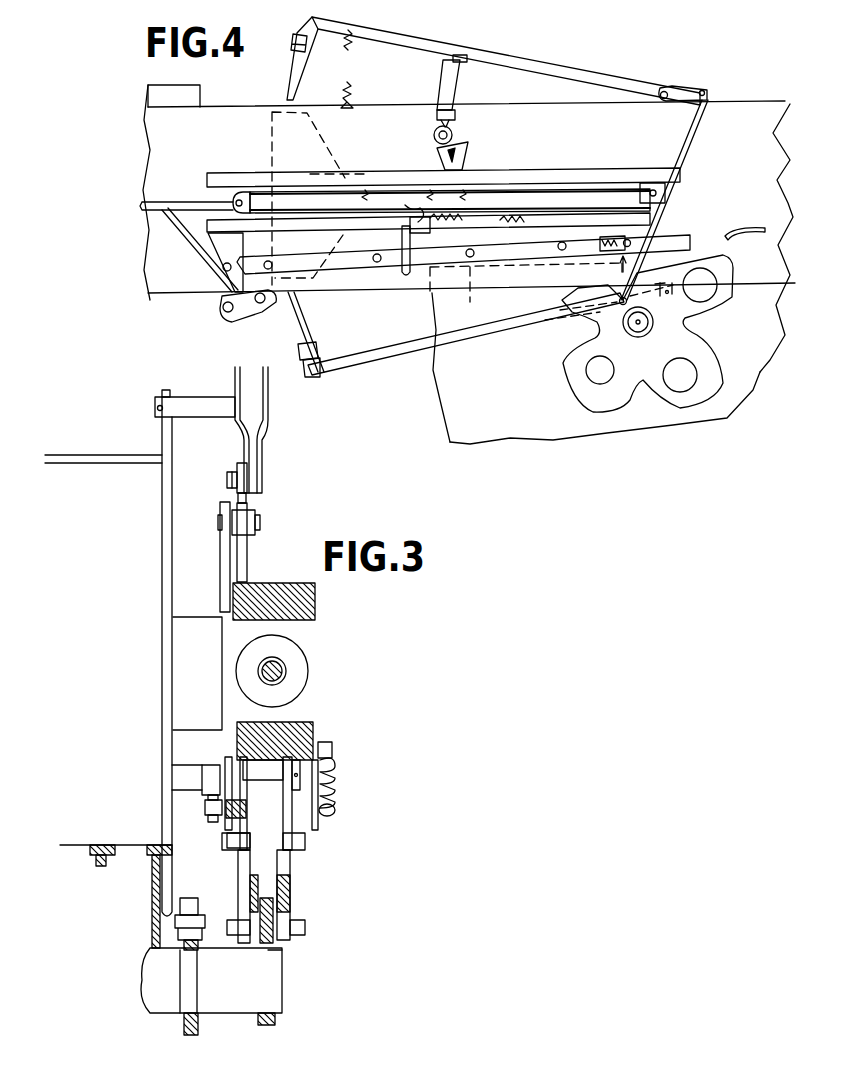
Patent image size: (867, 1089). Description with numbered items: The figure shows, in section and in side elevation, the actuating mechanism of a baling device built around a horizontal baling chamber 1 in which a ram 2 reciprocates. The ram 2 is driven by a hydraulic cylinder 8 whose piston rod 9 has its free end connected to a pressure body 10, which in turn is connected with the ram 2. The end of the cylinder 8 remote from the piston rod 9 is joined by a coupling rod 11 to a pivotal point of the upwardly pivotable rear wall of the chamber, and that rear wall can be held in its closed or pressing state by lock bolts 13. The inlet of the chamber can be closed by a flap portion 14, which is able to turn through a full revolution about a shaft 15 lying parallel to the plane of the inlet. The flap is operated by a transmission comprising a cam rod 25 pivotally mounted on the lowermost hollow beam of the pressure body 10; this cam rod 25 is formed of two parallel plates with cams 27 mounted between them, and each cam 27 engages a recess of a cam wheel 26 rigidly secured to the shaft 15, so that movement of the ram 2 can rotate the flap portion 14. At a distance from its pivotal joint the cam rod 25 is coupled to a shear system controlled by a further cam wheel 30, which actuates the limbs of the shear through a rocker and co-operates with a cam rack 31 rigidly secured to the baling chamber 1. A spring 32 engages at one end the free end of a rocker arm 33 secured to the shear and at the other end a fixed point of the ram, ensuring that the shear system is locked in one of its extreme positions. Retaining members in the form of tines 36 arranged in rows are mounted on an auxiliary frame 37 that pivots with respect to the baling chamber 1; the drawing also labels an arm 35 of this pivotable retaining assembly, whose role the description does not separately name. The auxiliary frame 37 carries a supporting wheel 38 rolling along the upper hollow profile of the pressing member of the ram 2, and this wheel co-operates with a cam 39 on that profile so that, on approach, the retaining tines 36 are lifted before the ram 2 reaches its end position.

In FIG. 4, the baling chamber 1 is at (413, 97).
In FIG. 3, the baling chamber 1 is at (97, 445).
In FIG. 4, the ram 2 is at (272, 124).
In FIG. 4, the hydraulic cylinder 8 is at (555, 190).
In FIG. 3, the hydraulic cylinder 8 is at (304, 662).
In FIG. 4, the piston rod 9 is at (640, 195).
In FIG. 3, the piston rod 9 is at (286, 674).
In FIG. 4, the pressure body 10 is at (598, 190).
In FIG. 3, the pressure body 10 is at (303, 583).
In FIG. 4, the coupling rod 11 is at (196, 200).
In FIG. 4, the lock bolts 13 is at (240, 318).
In FIG. 4, the flap portion 14 is at (472, 292).
In FIG. 4, the shaft 15 is at (637, 333).
In FIG. 3, the shaft 15 is at (250, 985).
In FIG. 4, the cam rod 25 is at (356, 268).
In FIG. 3, the cam rod 25 is at (285, 895).
In FIG. 4, the cam wheel 26 is at (592, 380).
In FIG. 3, the cam wheel 26 is at (284, 958).
In FIG. 4, the cams 27 is at (562, 250).
In FIG. 3, the cams 27 is at (270, 892).
In FIG. 3, the cam wheel 30 is at (205, 808).
In FIG. 4, the cam rack 31 is at (401, 237).
In FIG. 3, the cam rack 31 is at (210, 766).
In FIG. 3, the spring 32 is at (336, 782).
In FIG. 3, the rocker arm 33 is at (316, 815).
In FIG. 4, the arm 35 is at (586, 78).
In FIG. 3, the arm 35 is at (284, 416).
In FIG. 4, the tines 36 is at (292, 70).
In FIG. 4, the auxiliary frame 37 is at (504, 66).
In FIG. 4, the supporting wheel 38 is at (436, 133).
In FIG. 3, the supporting wheel 38 is at (238, 463).
In FIG. 4, the cam 39 is at (438, 150).
In FIG. 3, the cam 39 is at (244, 563).